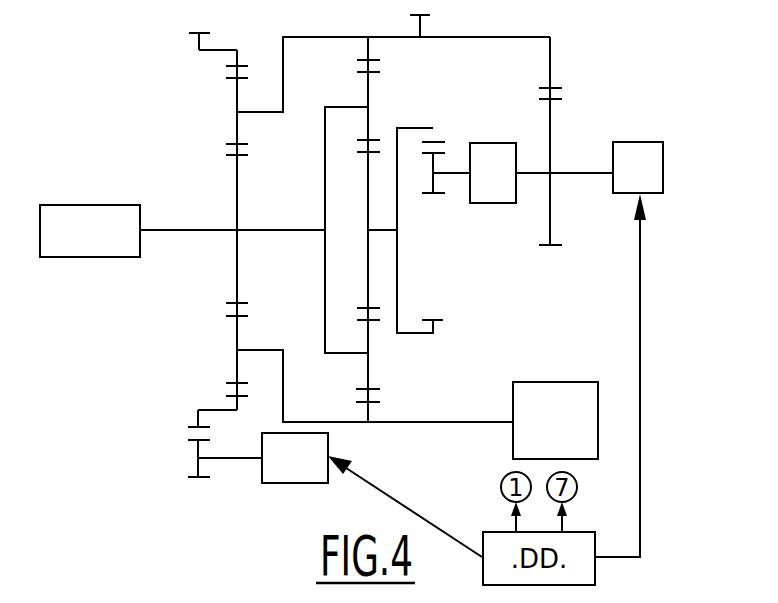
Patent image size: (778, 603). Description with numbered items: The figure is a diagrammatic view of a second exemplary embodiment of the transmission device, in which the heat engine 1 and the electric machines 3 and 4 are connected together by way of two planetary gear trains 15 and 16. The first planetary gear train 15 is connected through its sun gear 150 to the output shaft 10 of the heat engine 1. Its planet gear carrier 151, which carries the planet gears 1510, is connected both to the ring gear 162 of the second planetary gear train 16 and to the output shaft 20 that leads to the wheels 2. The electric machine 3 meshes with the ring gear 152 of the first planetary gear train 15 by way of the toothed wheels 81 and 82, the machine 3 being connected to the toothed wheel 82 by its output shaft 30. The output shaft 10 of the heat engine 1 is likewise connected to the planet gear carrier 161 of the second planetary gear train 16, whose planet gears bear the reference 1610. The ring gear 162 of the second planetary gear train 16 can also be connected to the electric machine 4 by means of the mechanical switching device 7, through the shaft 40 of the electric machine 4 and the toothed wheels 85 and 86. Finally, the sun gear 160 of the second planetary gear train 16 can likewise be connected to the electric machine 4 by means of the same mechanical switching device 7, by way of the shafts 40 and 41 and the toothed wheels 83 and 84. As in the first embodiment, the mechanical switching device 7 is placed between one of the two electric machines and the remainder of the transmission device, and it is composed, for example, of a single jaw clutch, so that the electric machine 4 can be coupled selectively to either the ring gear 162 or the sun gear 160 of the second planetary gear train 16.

The heat engine 1 is at (78, 235).
The output shaft 10 is at (162, 232).
The planetary gear train 15 is at (198, 174).
The sun gear 150 is at (237, 190).
The planet gear carrier 151 is at (317, 40).
The ring gear 152 is at (200, 50).
The planet gears 1510 is at (233, 335).
The second planetary gear train 16 is at (312, 243).
The sun gear 160 is at (368, 188).
The planet gear carrier 161 is at (325, 132).
The planet gears 1610 is at (368, 92).
The ring gear 162 is at (362, 418).
The output shaft 20 is at (448, 425).
The wheels 2 is at (573, 438).
The electric machine 3 is at (303, 467).
The output shaft 30 is at (228, 461).
The toothed wheel 81 is at (193, 416).
The toothed wheel 82 is at (195, 448).
The toothed wheel 83 is at (433, 132).
The toothed wheel 84 is at (432, 182).
The toothed wheel 85 is at (552, 55).
The toothed wheel 86 is at (552, 128).
The mechanical switching device 7 is at (497, 188).
The shaft 41 is at (457, 175).
The shaft 40 is at (537, 173).
The electric machine 4 is at (643, 170).